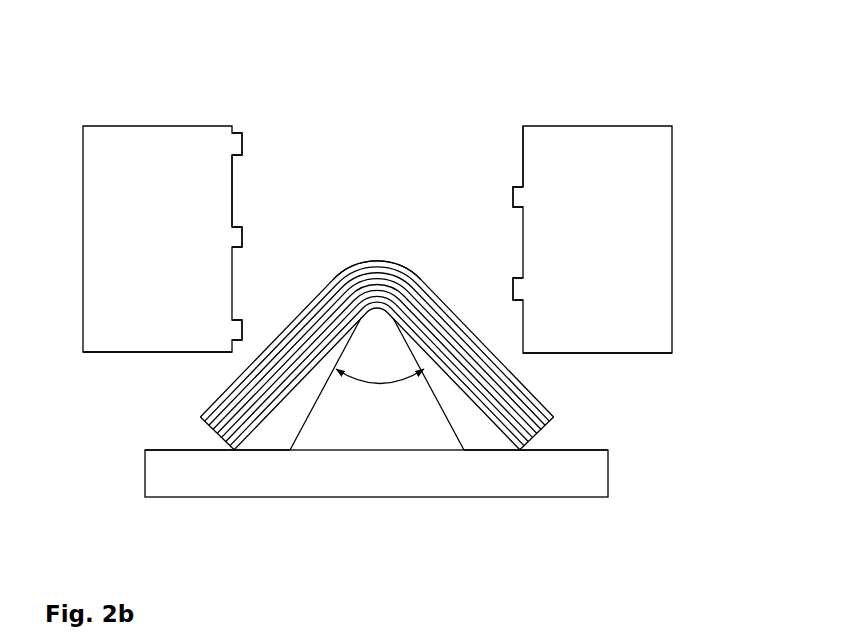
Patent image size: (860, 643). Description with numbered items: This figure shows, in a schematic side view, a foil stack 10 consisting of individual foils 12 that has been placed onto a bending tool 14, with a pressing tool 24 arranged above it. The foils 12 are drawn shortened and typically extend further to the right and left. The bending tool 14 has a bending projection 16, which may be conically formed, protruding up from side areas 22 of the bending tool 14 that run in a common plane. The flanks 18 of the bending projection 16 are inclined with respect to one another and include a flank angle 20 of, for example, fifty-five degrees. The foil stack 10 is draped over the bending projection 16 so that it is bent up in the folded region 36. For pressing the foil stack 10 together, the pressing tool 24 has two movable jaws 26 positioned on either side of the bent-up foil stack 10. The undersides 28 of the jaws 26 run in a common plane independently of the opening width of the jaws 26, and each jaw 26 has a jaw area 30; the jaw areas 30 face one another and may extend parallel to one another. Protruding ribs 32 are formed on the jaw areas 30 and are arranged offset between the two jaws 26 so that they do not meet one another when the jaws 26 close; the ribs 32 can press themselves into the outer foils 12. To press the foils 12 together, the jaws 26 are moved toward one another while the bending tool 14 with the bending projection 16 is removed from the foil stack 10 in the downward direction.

The foil stack 10 is at (428, 272).
The foils 12 is at (231, 385).
The bending tool 14 is at (644, 482).
The bending projection 16 is at (369, 454).
The flanks 18 is at (308, 419).
The flank angle 20 is at (380, 368).
The side areas 22 is at (198, 456).
The pressing tool 24 is at (530, 84).
The jaws 26 is at (143, 235).
The undersides 28 is at (138, 356).
The jaw area 30 is at (238, 195).
The ribs 32 is at (243, 143).
The folded region 36 is at (378, 218).